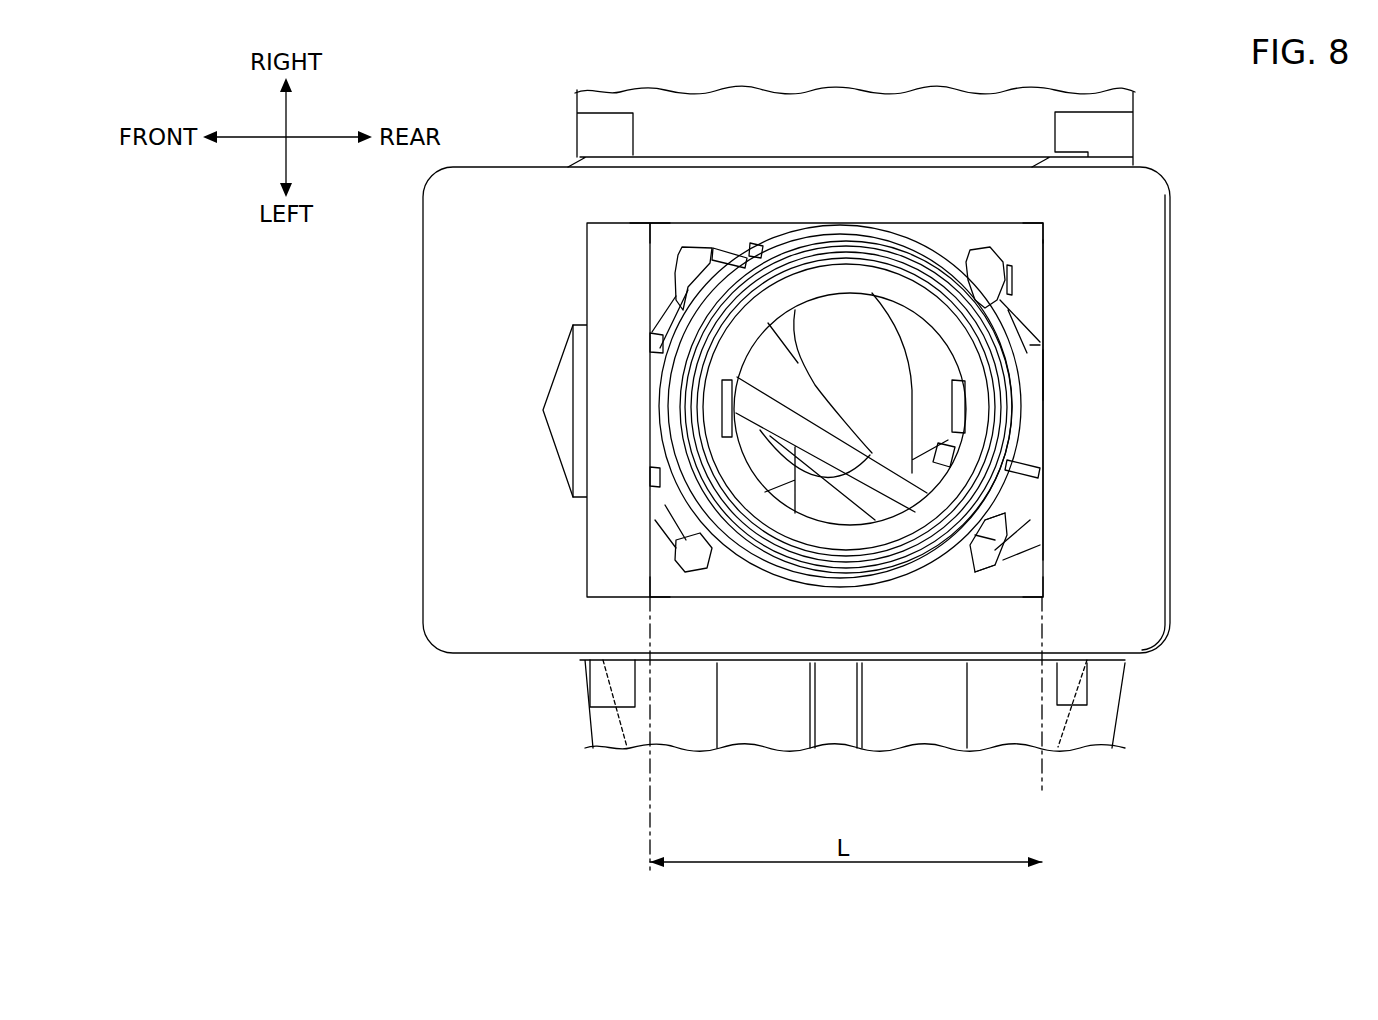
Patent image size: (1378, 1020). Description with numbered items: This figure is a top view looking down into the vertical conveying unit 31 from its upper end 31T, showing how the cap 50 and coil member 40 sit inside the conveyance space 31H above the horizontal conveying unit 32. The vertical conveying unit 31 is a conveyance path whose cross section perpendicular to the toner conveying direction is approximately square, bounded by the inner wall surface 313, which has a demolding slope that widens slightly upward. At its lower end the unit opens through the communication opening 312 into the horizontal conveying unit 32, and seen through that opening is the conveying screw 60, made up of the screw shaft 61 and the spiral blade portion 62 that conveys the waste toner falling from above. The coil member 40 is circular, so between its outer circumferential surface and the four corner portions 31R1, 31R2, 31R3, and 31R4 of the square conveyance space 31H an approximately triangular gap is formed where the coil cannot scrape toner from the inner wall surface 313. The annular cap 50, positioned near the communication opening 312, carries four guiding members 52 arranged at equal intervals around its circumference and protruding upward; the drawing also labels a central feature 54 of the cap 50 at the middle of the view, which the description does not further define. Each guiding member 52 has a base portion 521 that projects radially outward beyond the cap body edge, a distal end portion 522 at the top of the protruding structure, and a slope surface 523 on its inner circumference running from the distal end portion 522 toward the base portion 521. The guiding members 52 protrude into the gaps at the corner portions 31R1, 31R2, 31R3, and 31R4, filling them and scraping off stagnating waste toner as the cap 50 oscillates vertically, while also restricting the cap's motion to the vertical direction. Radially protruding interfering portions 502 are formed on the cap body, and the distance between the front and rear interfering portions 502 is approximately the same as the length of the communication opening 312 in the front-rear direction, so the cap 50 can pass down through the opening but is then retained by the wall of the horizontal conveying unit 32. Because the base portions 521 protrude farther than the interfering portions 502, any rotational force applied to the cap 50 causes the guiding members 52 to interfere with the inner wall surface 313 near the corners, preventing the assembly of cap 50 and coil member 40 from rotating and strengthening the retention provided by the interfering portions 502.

The vertical conveying unit 31 is at (1176, 254).
The upper end 31T is at (928, 118).
The conveyance space 31H is at (700, 233).
The communication opening 312 is at (1043, 245).
The inner wall surface 313 is at (1033, 372).
The corner portion 31R1 is at (1048, 224).
The corner portion 31R2 is at (650, 235).
The corner portion 31R3 is at (650, 597).
The corner portion 31R4 is at (1042, 597).
The horizontal conveying unit 32 is at (1120, 723).
The coil member 40 is at (665, 433).
The cap 50 is at (667, 310).
The guiding member 52 is at (677, 260).
The base portion 521 is at (1005, 500).
The distal end portion 522 is at (997, 555).
The slope surface 523 is at (980, 532).
The interfering portion 502 is at (658, 343).
The opening 54 is at (773, 355).
The conveying screw 60 is at (803, 610).
The screw shaft 61 is at (820, 500).
The blade portion 62 is at (773, 417).